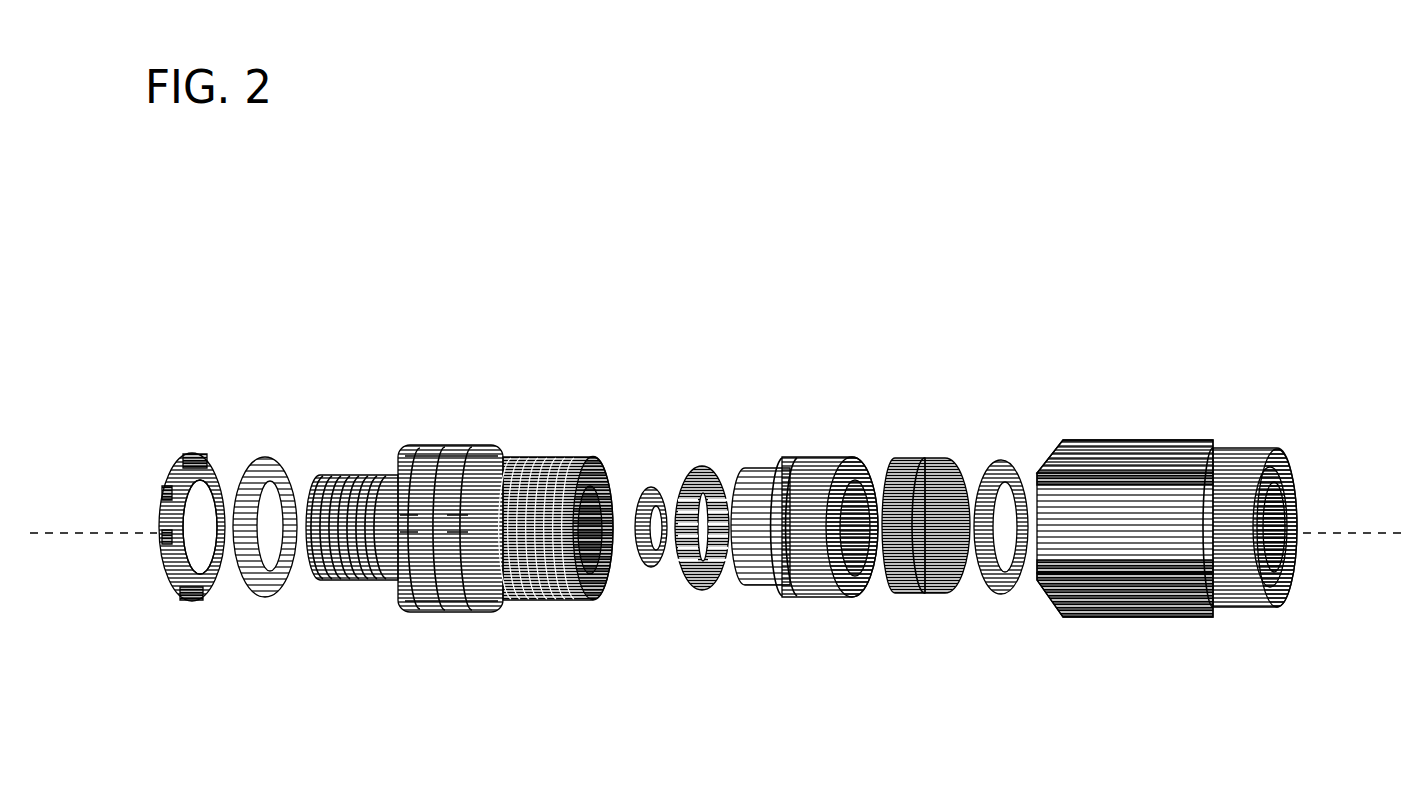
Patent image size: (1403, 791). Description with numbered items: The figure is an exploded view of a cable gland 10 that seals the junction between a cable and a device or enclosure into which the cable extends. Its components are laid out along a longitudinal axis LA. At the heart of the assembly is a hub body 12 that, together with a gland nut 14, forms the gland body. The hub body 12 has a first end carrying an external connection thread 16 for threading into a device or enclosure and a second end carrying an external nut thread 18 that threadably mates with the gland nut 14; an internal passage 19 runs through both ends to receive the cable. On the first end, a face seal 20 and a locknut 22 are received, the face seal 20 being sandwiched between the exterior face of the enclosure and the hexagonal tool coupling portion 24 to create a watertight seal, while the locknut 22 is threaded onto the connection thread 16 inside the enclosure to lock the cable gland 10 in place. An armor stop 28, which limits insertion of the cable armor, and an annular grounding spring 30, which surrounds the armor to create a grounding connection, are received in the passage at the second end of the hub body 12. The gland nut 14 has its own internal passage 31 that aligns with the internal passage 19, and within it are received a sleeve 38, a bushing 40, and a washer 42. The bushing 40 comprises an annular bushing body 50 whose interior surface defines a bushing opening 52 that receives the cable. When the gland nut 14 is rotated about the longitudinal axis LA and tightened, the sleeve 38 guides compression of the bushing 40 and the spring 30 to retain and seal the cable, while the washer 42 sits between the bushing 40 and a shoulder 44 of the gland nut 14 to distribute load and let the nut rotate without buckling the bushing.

The cable gland 10 is at (902, 265).
The hub body 12 is at (468, 427).
The gland nut 14 is at (1140, 427).
The external connection thread 16 is at (345, 581).
The external nut thread 18 is at (577, 600).
The internal passage 19 is at (588, 542).
The face seal 20 is at (265, 458).
The locknut 22 is at (178, 583).
The tool coupling portion 24 is at (440, 610).
The armor stop 28 is at (652, 487).
The grounding spring 30 is at (717, 590).
The internal passage 31 is at (1263, 548).
The sleeve 38 is at (837, 600).
The bushing 40 is at (923, 450).
The washer 42 is at (1007, 593).
The shoulder 44 is at (1277, 507).
The bushing body 50 is at (920, 593).
The bushing opening 52 is at (950, 542).
The longitudinal axis LA is at (1340, 533).